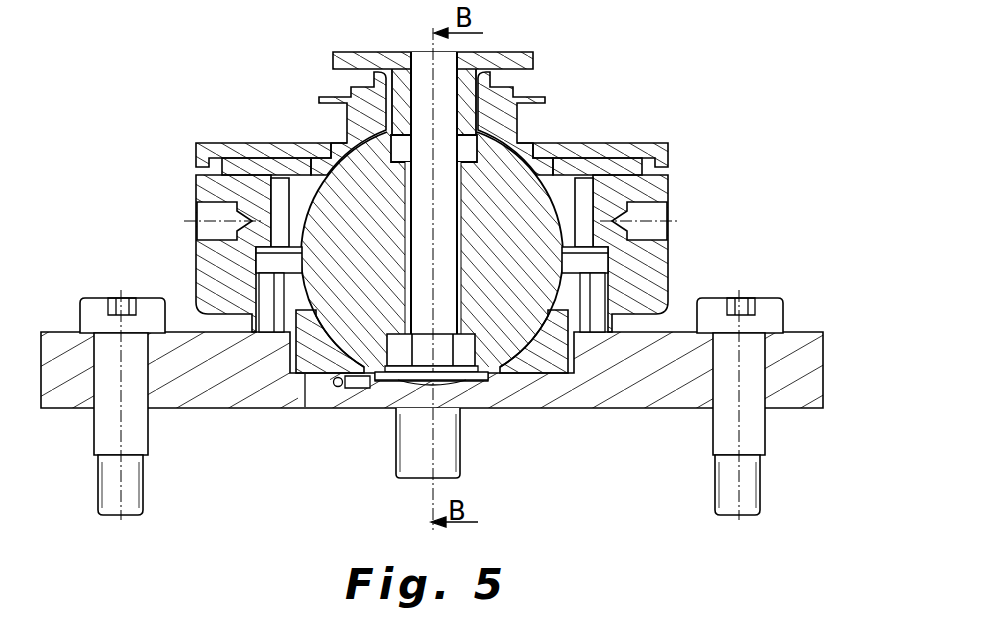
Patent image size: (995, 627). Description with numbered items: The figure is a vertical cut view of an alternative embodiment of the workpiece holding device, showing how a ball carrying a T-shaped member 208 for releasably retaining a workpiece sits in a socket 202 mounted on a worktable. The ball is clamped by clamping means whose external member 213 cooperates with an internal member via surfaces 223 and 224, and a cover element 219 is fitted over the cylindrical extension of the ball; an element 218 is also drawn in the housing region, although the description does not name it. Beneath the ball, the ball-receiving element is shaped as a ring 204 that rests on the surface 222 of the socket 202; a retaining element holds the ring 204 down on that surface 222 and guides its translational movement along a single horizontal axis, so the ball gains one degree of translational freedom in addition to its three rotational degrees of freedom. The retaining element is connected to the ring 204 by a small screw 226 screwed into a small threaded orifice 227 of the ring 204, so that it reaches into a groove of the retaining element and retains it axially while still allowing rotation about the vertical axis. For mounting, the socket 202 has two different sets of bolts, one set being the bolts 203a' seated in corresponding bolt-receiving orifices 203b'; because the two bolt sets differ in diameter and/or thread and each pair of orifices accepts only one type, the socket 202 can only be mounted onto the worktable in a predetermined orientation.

The socket 202 is at (476, 453).
The bolts 203a' is at (791, 503).
The bolt-receiving orifices 203b' is at (793, 394).
The ring 204 is at (566, 327).
The T-shaped member 208 is at (515, 52).
The external member 213 is at (668, 272).
The set screw 218 is at (650, 213).
The cover element 219 is at (672, 158).
The surface of the socket 222 is at (577, 376).
The surface 223 is at (586, 172).
The surface 224 is at (552, 158).
The small screw 226 is at (334, 405).
The small threaded orifice 227 is at (348, 400).